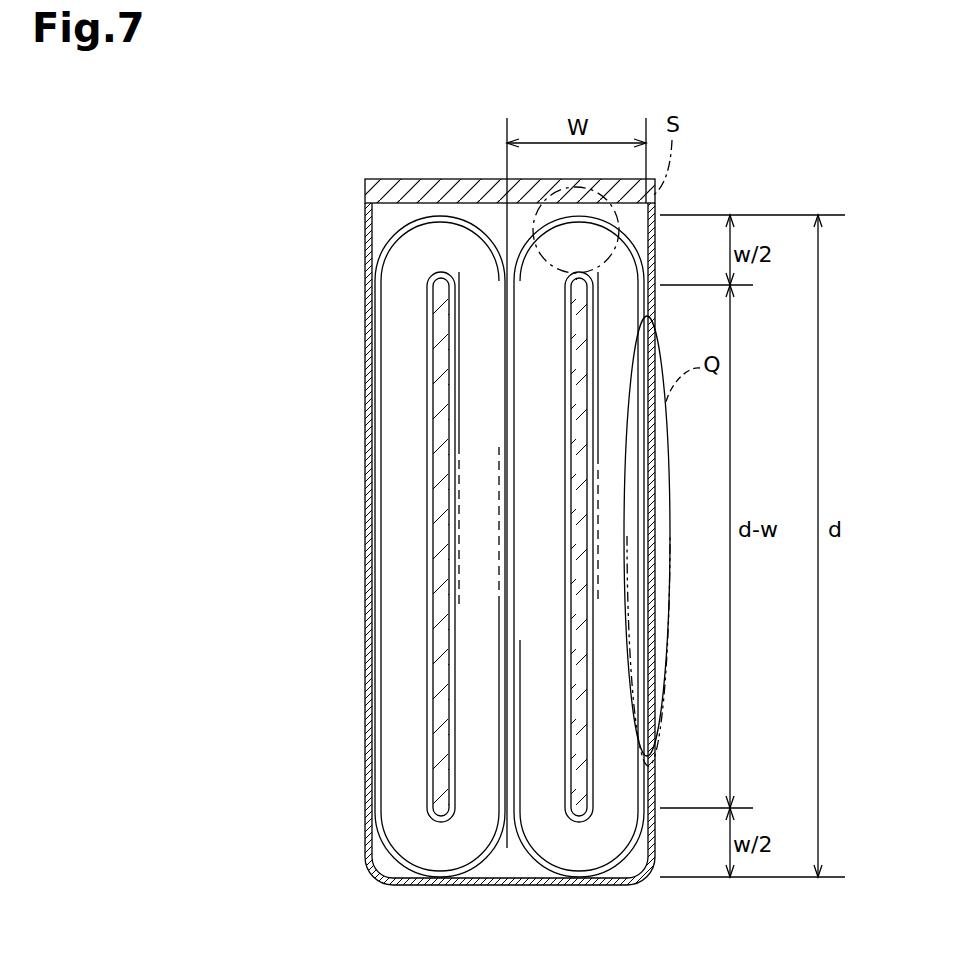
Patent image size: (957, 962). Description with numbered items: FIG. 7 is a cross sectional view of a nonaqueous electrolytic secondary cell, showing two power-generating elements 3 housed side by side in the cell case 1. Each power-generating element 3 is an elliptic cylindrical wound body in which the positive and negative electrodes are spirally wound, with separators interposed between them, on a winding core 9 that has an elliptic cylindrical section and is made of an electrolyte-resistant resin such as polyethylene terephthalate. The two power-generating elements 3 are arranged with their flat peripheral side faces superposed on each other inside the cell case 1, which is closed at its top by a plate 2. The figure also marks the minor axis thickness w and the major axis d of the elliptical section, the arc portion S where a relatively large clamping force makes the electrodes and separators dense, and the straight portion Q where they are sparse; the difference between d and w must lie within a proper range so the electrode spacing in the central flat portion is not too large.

The cell case 1 is at (366, 425).
The sealing plate 2 is at (437, 193).
The power-generating element 3 is at (399, 226).
The winding core 9 is at (440, 800).